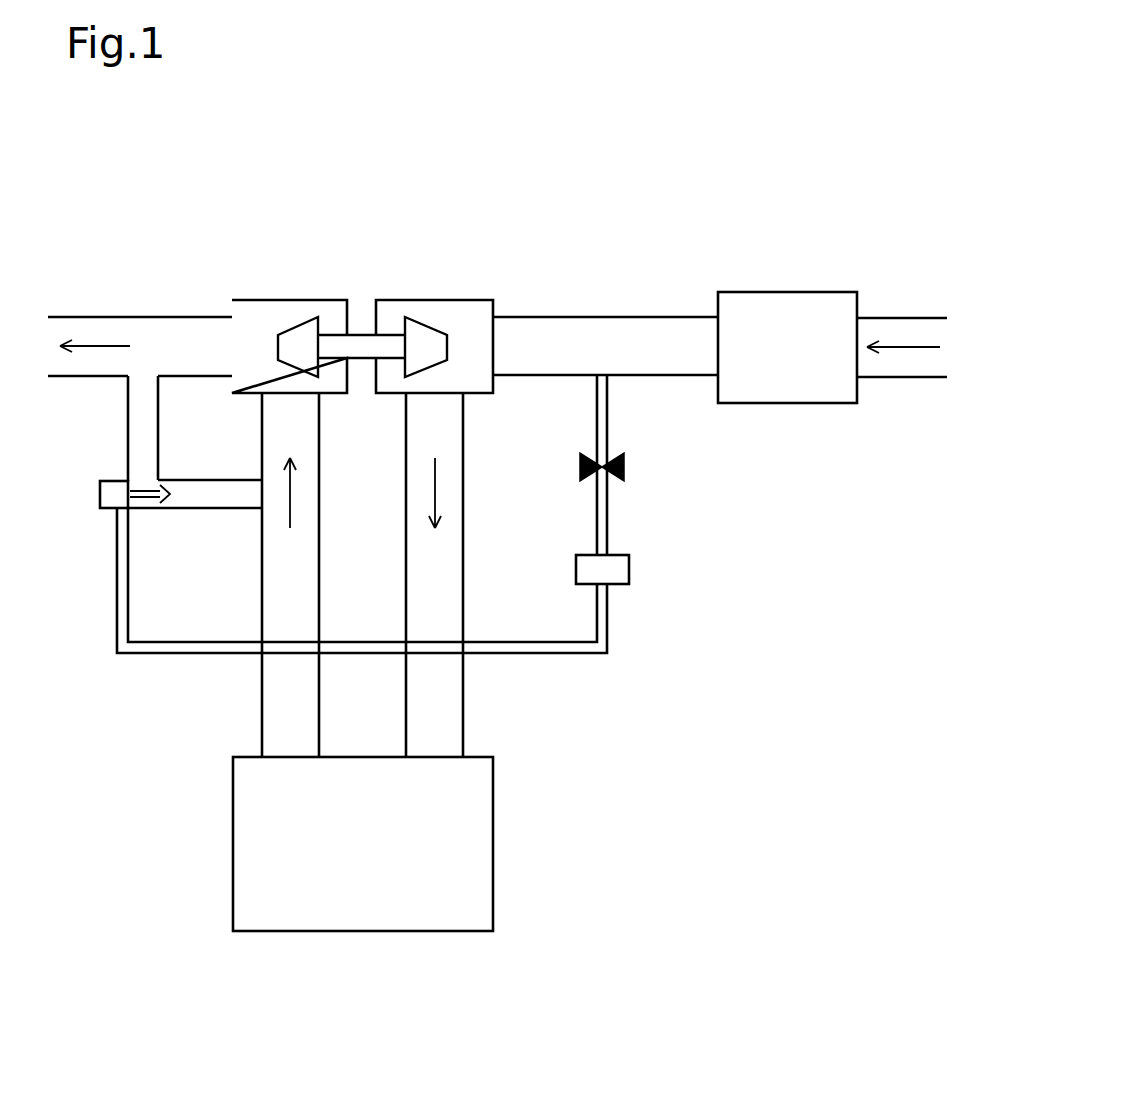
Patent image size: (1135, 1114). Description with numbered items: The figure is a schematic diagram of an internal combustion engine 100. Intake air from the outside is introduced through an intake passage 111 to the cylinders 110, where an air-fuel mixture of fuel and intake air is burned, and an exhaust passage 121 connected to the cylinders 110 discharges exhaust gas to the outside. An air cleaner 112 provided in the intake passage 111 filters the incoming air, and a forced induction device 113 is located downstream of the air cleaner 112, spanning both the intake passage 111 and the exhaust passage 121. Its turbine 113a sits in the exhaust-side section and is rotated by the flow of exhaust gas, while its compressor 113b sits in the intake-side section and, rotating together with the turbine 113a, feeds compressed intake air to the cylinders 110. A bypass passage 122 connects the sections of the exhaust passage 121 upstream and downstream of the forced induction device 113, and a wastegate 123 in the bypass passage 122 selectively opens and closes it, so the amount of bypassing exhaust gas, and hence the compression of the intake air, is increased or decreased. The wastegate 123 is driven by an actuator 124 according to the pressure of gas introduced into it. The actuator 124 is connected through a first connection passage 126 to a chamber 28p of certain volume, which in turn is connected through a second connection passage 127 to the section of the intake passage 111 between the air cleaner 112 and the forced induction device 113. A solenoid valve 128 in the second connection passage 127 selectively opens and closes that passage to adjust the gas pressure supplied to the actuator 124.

The internal combustion engine 100 is at (776, 826).
The cylinders 110 is at (494, 845).
The intake passage 111 is at (605, 316).
The air cleaner 112 is at (787, 292).
The forced induction device 113 is at (362, 289).
The turbine 113a is at (289, 328).
The compressor 113b is at (434, 316).
The exhaust passage 121 is at (147, 316).
The bypass passage 122 is at (159, 430).
The wastegate 123 is at (168, 510).
The actuator 124 is at (99, 492).
The first connection passage 126 is at (543, 655).
The second connection passage 127 is at (609, 430).
The solenoid valve 128 is at (625, 466).
The chamber 28p is at (630, 570).